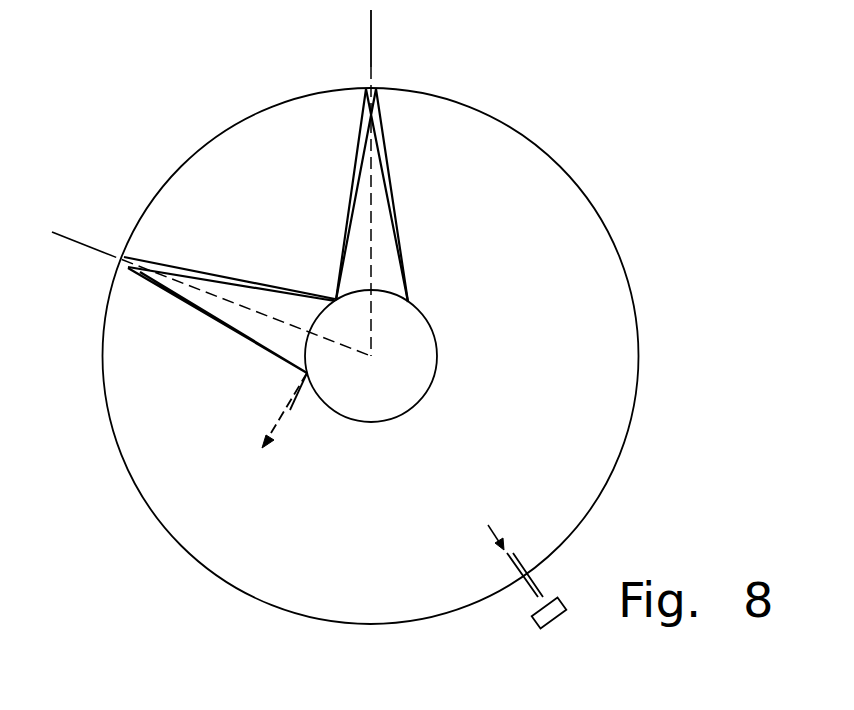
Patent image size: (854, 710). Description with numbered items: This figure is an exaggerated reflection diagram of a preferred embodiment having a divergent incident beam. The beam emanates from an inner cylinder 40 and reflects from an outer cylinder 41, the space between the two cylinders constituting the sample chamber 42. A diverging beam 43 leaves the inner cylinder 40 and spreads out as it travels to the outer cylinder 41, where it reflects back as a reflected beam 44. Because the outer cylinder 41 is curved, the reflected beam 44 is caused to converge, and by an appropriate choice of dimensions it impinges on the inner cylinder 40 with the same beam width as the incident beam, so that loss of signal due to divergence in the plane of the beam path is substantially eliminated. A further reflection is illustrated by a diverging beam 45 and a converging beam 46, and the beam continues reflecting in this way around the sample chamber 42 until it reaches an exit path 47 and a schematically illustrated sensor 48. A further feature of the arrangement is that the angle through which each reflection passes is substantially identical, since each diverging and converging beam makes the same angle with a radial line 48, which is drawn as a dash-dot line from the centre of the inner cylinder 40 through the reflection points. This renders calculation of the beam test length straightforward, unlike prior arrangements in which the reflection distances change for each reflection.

The inner cylinder 40 is at (437, 357).
The outer cylinder 41 is at (640, 325).
The sample chamber 42 is at (367, 531).
The diverging beam 43 is at (397, 226).
The reflected beam 44 is at (354, 172).
The diverging beam 45 is at (256, 283).
The converging beam 46 is at (245, 336).
The exit path 47 is at (528, 572).
The sensor / radial line 48 is at (372, 46).